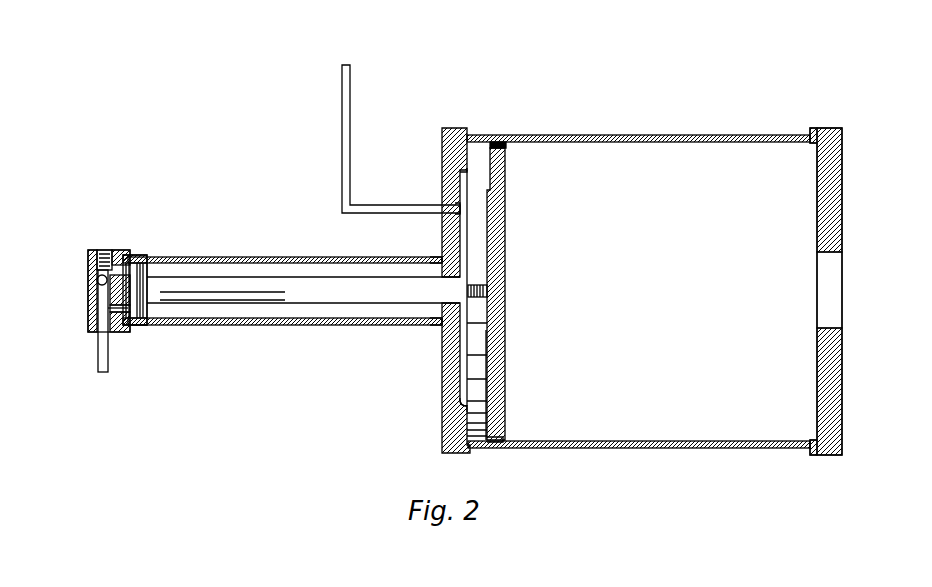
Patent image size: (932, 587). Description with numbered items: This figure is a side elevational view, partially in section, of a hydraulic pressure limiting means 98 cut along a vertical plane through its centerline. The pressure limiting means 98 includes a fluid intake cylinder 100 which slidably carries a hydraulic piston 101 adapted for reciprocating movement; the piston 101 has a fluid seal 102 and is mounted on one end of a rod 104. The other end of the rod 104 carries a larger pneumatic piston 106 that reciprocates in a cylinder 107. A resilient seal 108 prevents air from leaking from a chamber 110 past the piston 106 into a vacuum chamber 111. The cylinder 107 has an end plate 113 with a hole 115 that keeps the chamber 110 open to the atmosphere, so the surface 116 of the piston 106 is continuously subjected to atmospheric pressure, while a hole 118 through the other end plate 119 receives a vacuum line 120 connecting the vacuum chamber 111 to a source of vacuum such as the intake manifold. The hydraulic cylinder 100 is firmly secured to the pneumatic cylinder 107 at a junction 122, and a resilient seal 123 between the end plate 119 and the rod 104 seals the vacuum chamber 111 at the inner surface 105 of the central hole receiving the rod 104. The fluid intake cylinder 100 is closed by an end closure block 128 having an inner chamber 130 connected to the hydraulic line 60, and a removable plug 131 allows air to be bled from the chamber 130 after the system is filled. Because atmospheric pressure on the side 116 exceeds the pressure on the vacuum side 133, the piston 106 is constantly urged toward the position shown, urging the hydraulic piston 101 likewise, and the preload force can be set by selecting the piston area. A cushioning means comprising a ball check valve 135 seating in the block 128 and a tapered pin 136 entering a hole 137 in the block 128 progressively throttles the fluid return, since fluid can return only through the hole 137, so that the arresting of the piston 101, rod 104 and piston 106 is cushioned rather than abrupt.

The hydraulic line 60 is at (100, 360).
The pressure limiting means 98 is at (647, 274).
The fluid intake cylinder 100 is at (250, 257).
The piston 101 is at (130, 318).
The fluid seal 102 is at (138, 325).
The rod 104 is at (283, 300).
The inner surface 105 is at (458, 290).
The pneumatic piston 106 is at (500, 220).
The cylinder 107 is at (612, 135).
The resilient seal 108 is at (496, 143).
The chamber 110 is at (662, 428).
The vacuum chamber 111 is at (462, 181).
The end plate 113 is at (838, 200).
The hole 115 is at (832, 277).
The surface 116 is at (505, 335).
The hole 118 is at (456, 206).
The end plate 119 is at (441, 375).
The vacuum line 120 is at (351, 80).
The junction 122 is at (443, 258).
The resilient seal 123 is at (441, 320).
The end closure block 128 is at (130, 250).
The inner chamber 130 is at (97, 262).
The removable plug 131 is at (104, 250).
The vacuum side 133 is at (452, 412).
The ball check valve 135 is at (97, 281).
The tapered pin 136 is at (109, 305).
The hole 137 is at (108, 309).